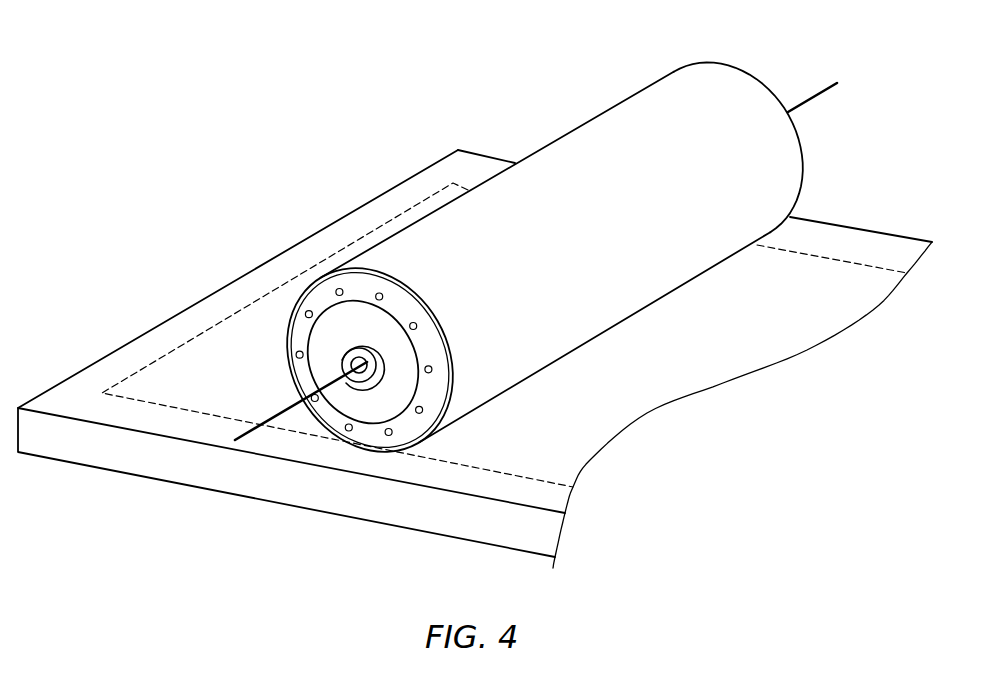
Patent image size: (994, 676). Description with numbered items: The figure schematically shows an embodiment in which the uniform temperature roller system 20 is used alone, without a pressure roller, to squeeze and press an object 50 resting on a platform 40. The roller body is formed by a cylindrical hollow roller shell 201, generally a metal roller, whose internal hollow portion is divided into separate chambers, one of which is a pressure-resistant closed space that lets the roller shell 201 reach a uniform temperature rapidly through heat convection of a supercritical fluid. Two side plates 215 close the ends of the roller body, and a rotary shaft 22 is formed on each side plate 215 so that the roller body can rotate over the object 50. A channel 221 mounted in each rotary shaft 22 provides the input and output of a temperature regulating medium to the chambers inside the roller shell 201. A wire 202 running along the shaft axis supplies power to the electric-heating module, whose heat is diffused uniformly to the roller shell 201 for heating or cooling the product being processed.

The uniform temperature roller system 20 is at (462, 280).
The roller shell 201 is at (542, 163).
The wire 202 is at (237, 433).
The side plate 215 is at (338, 318).
The rotary shaft 22 is at (366, 381).
The channel 221 is at (351, 383).
The platform 40 is at (485, 527).
The object 50 is at (218, 353).